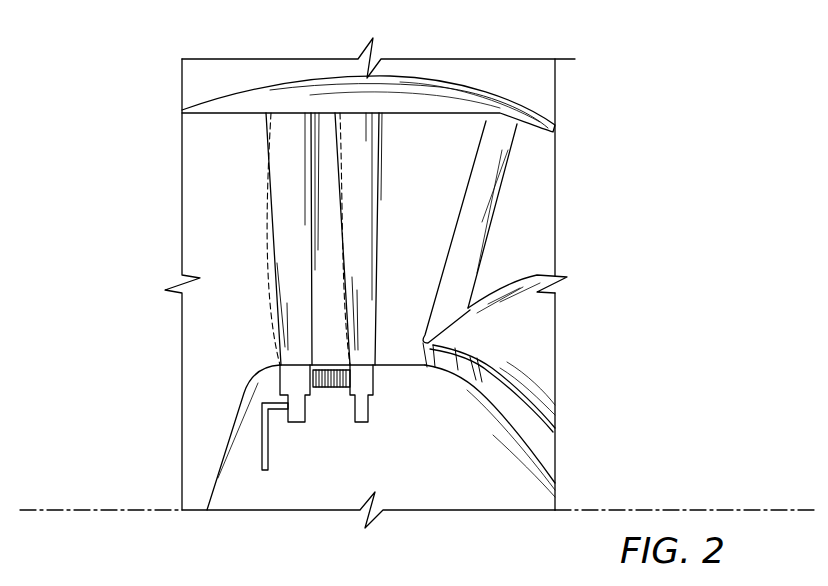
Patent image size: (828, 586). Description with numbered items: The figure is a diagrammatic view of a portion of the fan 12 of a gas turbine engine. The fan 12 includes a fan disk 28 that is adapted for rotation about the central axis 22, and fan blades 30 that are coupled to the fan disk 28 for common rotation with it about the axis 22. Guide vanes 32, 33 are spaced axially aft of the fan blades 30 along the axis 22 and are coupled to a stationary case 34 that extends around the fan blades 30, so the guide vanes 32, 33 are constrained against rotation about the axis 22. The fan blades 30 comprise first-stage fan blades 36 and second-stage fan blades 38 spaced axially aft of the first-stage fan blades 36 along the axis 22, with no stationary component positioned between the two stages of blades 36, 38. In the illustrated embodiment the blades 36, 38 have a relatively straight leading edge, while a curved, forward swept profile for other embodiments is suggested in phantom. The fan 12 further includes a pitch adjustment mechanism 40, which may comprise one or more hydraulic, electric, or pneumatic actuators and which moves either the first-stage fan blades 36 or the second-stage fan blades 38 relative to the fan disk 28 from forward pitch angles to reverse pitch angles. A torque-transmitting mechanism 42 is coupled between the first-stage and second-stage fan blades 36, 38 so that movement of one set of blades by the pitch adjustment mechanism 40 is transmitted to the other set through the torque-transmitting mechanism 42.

The fan 12 is at (525, 38).
The central axis 22 is at (50, 510).
The fan disk 28 is at (242, 487).
The fan blades 30 is at (328, 126).
The guide vane 32 is at (524, 164).
The guide vane 33 is at (459, 367).
The stationary case 34 is at (418, 97).
The first-stage fan blades 36 is at (253, 163).
The second-stage fan blades 38 is at (401, 153).
The pitch adjustment mechanism 40 is at (242, 412).
The torque-transmitting mechanism 42 is at (330, 352).